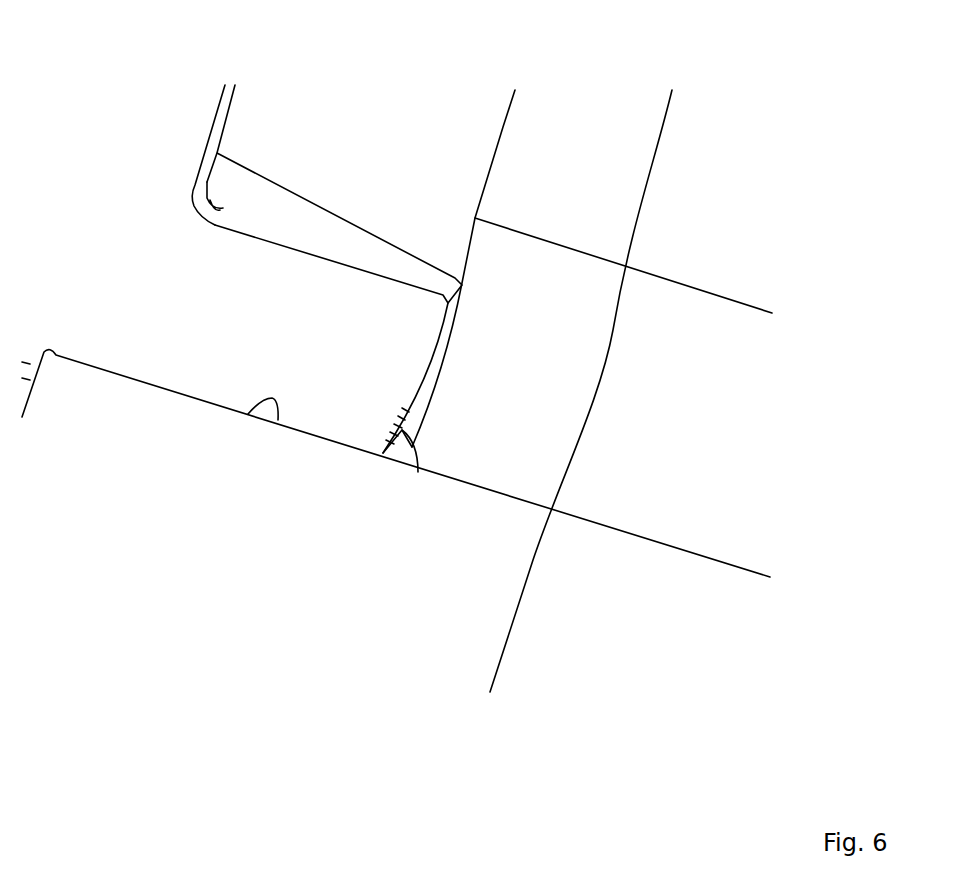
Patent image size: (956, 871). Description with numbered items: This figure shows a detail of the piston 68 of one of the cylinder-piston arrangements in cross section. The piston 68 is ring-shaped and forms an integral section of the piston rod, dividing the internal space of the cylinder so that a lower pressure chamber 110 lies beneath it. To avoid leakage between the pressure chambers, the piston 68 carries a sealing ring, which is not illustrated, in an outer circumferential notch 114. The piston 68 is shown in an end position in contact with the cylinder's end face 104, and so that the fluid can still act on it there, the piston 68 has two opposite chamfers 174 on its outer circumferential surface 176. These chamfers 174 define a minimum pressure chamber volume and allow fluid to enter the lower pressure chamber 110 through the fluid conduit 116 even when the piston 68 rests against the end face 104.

The piston 68 is at (222, 345).
The cylinder end face 104 is at (278, 420).
The lower pressure chamber 110 is at (398, 450).
The outer circumferential notch 114 is at (430, 150).
The fluid conduit 116 is at (740, 470).
The chamfer 174 is at (418, 472).
The outer circumferential surface 176 is at (445, 338).